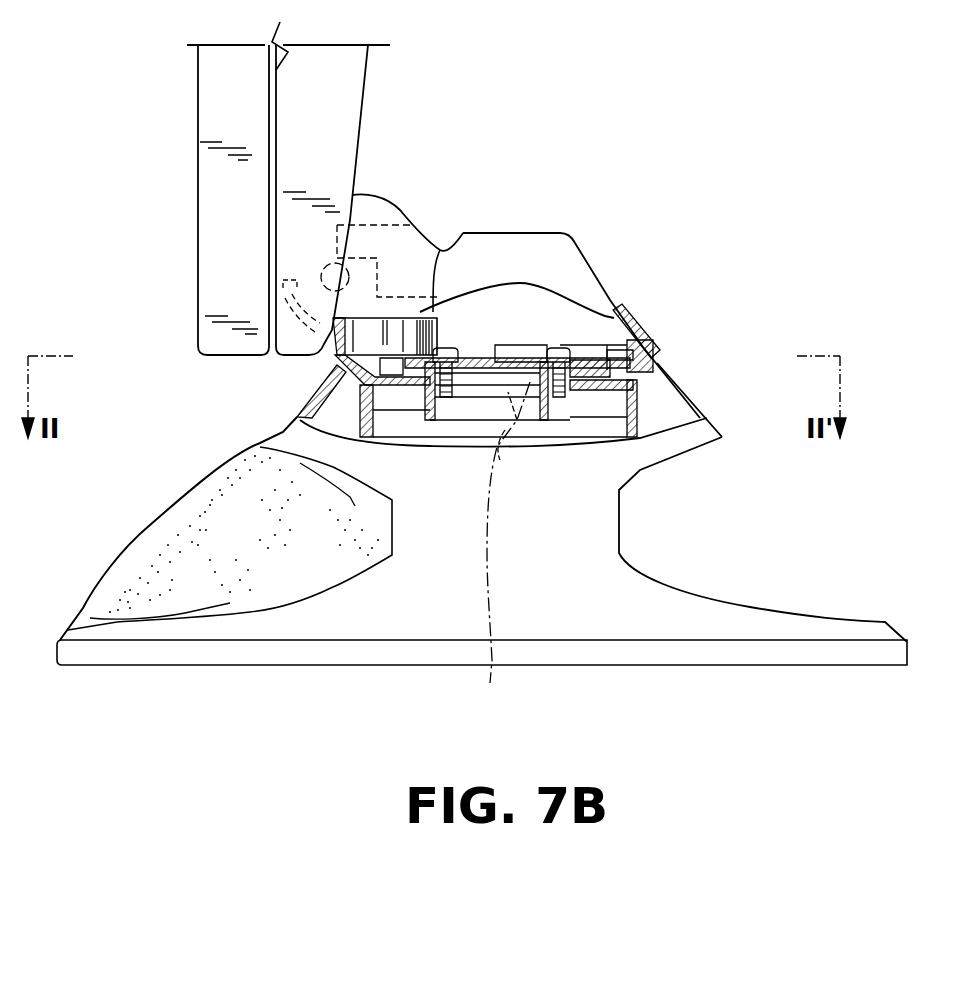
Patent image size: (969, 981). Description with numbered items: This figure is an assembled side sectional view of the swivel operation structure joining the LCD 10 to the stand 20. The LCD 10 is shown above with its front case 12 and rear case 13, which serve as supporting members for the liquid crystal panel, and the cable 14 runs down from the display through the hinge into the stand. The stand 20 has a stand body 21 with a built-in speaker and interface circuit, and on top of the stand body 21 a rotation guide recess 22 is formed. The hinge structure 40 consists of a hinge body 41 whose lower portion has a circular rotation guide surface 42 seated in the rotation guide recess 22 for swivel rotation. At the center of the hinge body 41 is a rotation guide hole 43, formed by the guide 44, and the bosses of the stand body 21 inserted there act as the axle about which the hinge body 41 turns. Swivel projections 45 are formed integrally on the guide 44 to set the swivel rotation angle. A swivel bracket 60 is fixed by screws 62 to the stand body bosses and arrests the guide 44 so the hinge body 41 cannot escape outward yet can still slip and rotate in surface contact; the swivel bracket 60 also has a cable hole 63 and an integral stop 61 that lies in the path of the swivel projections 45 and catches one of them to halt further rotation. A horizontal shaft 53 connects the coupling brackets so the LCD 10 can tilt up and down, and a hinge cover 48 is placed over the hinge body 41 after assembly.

The LCD 10 is at (180, 100).
The front case 12 is at (200, 158).
The rear case 13 is at (356, 88).
The cable 14 is at (490, 683).
The stand 20 is at (132, 497).
The stand body 21 is at (402, 625).
The rotation guide recess 22 is at (668, 384).
The hinge structure 40 is at (373, 178).
The hinge body 41 is at (640, 362).
The rotation guide surface 42 is at (655, 372).
The rotation guide hole 43 is at (573, 410).
The guide 44 is at (368, 380).
The swivel projection 45 is at (335, 362).
The hinge cover 48 is at (650, 352).
The horizontal shaft 53 is at (330, 287).
The swivel bracket 60 is at (410, 228).
The stop 61 is at (605, 345).
The screws 62 is at (462, 348).
The cable hole 63 is at (517, 420).